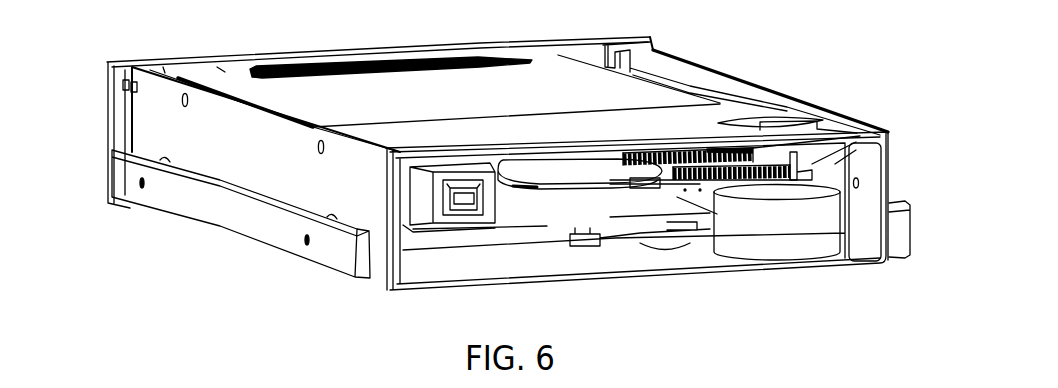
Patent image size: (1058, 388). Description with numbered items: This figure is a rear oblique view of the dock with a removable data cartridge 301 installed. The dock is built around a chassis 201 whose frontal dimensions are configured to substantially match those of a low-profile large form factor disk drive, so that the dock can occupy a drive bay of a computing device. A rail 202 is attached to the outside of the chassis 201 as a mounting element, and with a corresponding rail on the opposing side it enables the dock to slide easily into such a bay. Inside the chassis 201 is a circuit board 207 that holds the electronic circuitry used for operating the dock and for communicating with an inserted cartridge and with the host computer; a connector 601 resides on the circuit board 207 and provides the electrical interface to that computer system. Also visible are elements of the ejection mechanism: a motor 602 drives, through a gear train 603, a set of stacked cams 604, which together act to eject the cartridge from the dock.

The chassis 201 is at (147, 133).
The rail 202 is at (235, 226).
The removable data cartridge 301 is at (458, 101).
The connector 601 is at (463, 217).
The motor 602 is at (780, 250).
The gear train 603 is at (702, 180).
The set of stacked cams 604 is at (567, 170).
The circuit board 207 is at (583, 205).